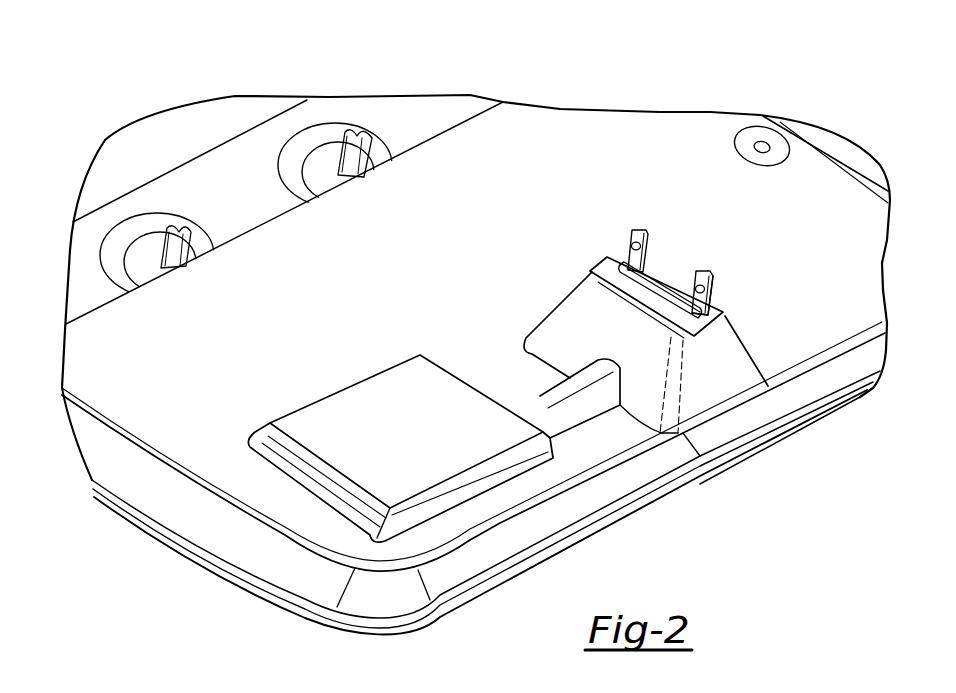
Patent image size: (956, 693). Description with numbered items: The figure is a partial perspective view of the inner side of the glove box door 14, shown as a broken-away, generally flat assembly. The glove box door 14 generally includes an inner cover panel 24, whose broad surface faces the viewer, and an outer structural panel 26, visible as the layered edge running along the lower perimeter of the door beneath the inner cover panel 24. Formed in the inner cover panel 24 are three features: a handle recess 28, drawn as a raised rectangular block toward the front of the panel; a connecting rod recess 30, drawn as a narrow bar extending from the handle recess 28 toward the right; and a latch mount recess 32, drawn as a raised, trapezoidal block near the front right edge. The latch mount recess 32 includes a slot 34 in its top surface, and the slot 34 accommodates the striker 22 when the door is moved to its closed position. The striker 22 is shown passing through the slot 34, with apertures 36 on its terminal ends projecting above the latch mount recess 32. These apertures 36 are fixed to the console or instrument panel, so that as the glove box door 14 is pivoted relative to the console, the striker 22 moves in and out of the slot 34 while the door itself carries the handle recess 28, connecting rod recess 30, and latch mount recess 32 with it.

The glove box door 14 is at (421, 86).
The striker 22 is at (712, 293).
The inner cover panel 24 is at (444, 263).
The outer structural panel 26 is at (625, 514).
The handle recess 28 is at (358, 395).
The connecting rod recess 30 is at (535, 398).
The latch mount recess 32 is at (646, 306).
The slot 34 is at (657, 277).
The apertures 36 is at (630, 231).